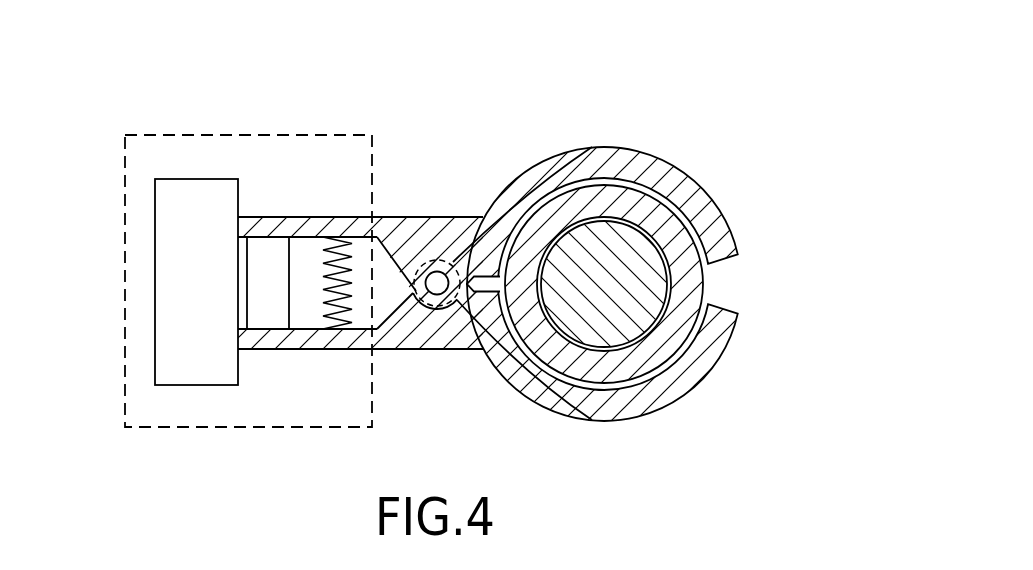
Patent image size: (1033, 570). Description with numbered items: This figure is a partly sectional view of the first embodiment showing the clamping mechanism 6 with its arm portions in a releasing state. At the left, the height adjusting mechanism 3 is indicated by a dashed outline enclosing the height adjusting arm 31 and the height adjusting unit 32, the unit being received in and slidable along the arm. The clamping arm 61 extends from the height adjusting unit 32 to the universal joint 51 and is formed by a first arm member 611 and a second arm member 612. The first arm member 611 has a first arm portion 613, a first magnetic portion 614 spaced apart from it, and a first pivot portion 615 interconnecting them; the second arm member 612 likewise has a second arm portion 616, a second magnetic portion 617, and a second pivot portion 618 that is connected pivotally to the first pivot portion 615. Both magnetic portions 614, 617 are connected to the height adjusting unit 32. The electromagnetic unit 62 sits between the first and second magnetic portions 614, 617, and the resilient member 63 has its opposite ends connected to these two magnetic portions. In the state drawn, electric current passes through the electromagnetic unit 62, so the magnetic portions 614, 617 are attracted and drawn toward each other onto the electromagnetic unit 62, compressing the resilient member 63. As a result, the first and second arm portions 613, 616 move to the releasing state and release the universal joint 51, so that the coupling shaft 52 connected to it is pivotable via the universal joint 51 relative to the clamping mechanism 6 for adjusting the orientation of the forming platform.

The height adjusting mechanism 3 is at (121, 127).
The height adjusting arm 31 is at (205, 133).
The height adjusting unit 32 is at (180, 238).
The clamping mechanism 6 is at (488, 75).
The clamping arm 61 is at (573, 130).
The first arm member 611 is at (466, 368).
The second arm member 612 is at (465, 208).
The first arm portion 613 is at (623, 400).
The first magnetic portion 614 is at (287, 338).
The first pivot portion 615 is at (440, 317).
The second arm portion 616 is at (667, 173).
The second magnetic portion 617 is at (328, 227).
The second pivot portion 618 is at (437, 270).
The electromagnetic unit 62 is at (268, 255).
The resilient member 63 is at (344, 320).
The universal joint 51 is at (688, 270).
The coupling shaft 52 is at (652, 296).